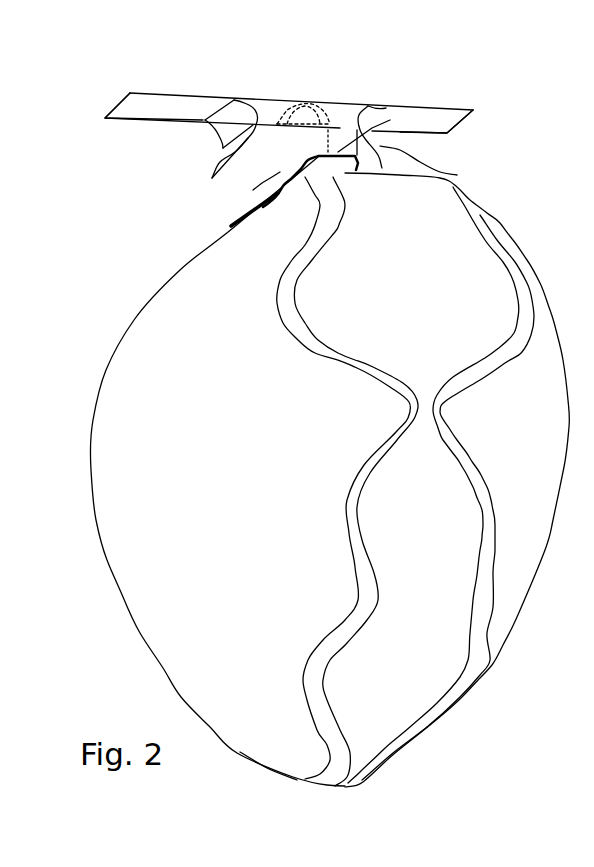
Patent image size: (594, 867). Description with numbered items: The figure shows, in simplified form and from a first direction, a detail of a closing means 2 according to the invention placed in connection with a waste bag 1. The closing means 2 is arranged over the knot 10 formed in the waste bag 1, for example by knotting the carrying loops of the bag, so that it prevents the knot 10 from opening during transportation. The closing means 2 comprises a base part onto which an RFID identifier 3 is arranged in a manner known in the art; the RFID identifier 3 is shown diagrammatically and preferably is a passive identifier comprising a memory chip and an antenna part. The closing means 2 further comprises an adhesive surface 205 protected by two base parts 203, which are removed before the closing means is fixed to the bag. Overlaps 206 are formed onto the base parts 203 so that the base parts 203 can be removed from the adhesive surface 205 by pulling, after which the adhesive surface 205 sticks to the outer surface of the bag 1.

The waste bag 1 is at (150, 315).
The closing means 2 is at (400, 107).
The RFID identifier 3 is at (317, 103).
The knot 10 is at (267, 190).
The base part 203 is at (167, 110).
The adhesive surface 205 is at (363, 108).
The overlap 206 is at (207, 168).